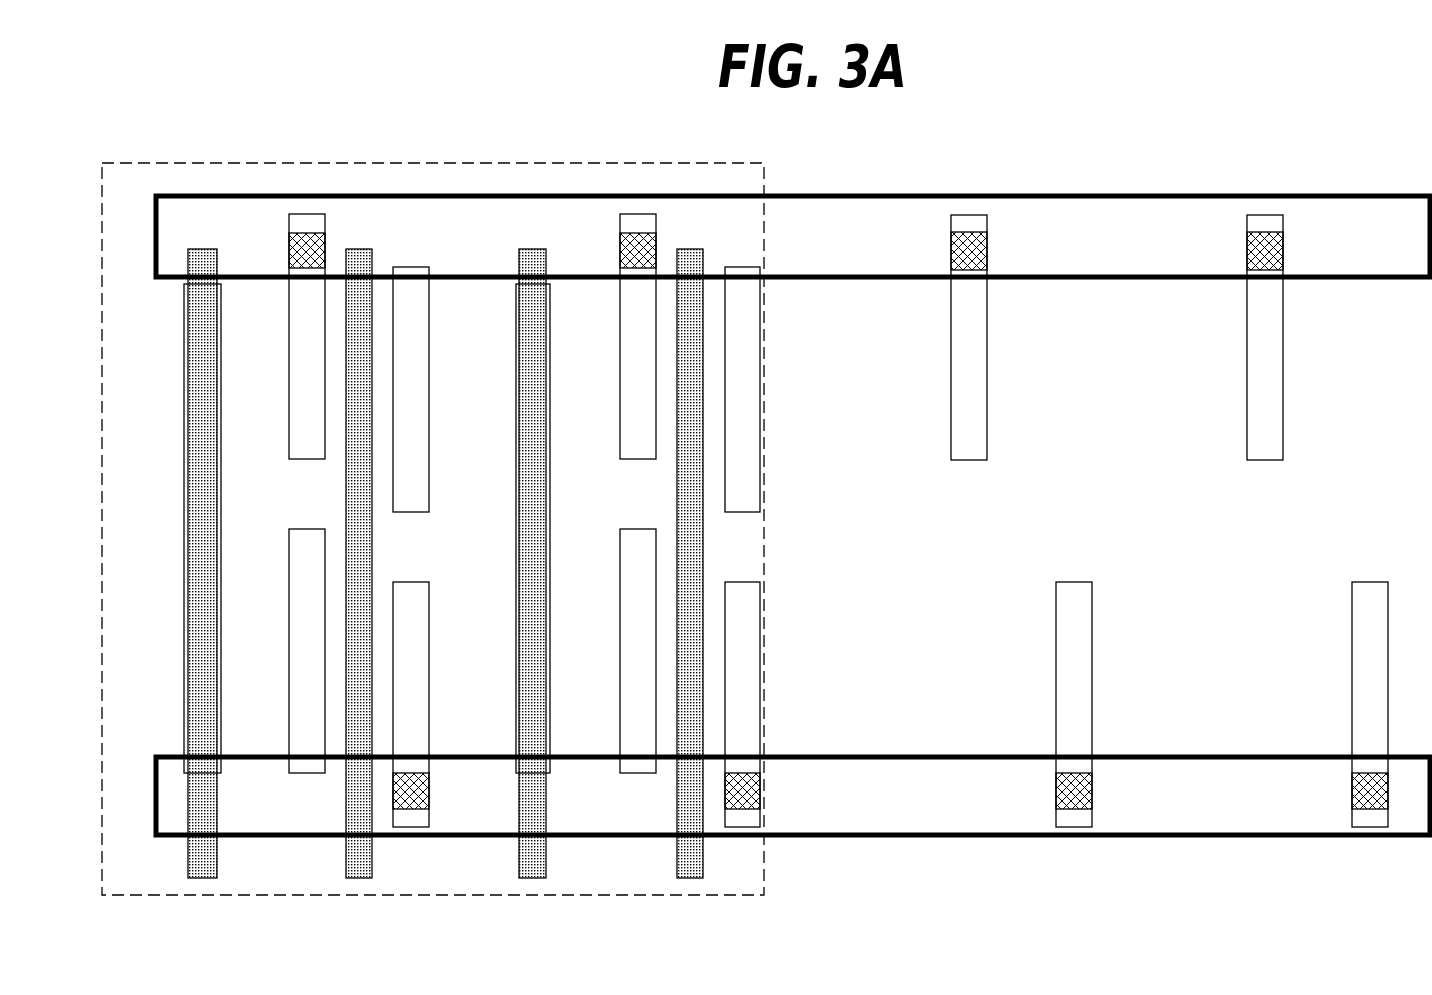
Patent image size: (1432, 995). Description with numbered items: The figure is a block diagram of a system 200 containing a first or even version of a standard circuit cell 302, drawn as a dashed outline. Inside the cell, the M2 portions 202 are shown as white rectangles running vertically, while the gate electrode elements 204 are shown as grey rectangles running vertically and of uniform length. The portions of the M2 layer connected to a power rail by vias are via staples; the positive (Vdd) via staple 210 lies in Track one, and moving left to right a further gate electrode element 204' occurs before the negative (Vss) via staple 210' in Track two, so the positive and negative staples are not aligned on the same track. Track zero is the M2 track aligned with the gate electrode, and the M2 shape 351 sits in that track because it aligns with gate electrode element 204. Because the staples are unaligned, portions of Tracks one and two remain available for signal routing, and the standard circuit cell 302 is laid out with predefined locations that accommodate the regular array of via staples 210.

The system 200 is at (1358, 88).
The M2 portion 202 is at (412, 268).
The gate electrode element 204 is at (552, 503).
The via staple 210 is at (656, 454).
The standard circuit cell 302 is at (766, 175).
The M2 shape 351 is at (553, 778).
The gate electrode element 204' is at (712, 595).
The negative via staple 210' is at (783, 604).